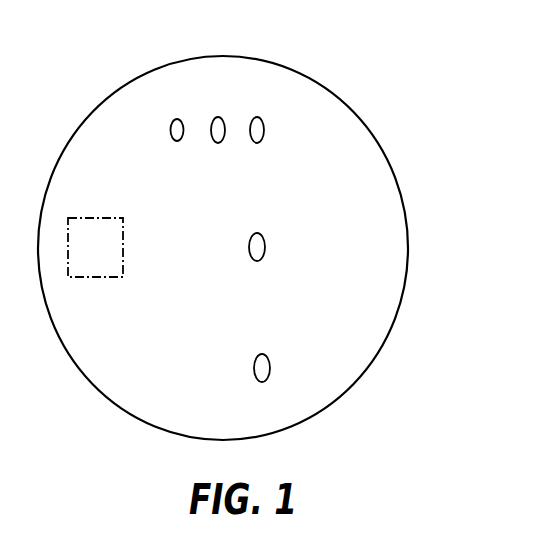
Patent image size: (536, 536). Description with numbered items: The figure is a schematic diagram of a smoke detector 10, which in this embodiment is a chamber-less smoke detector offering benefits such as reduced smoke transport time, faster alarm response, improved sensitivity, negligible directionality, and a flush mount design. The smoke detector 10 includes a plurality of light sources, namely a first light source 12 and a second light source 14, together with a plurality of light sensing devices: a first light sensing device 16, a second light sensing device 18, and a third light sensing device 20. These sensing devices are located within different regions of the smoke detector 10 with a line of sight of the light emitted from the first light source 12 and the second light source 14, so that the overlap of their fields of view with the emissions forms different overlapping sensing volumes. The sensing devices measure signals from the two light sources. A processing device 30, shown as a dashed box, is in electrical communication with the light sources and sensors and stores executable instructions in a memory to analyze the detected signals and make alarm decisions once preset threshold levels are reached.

The smoke detector 10 is at (413, 99).
The first light source 12 is at (264, 128).
The second light source 14 is at (172, 139).
The first light sensing device 16 is at (270, 365).
The second light sensing device 18 is at (265, 243).
The third light sensing device 20 is at (218, 117).
The processing device 30 is at (108, 259).